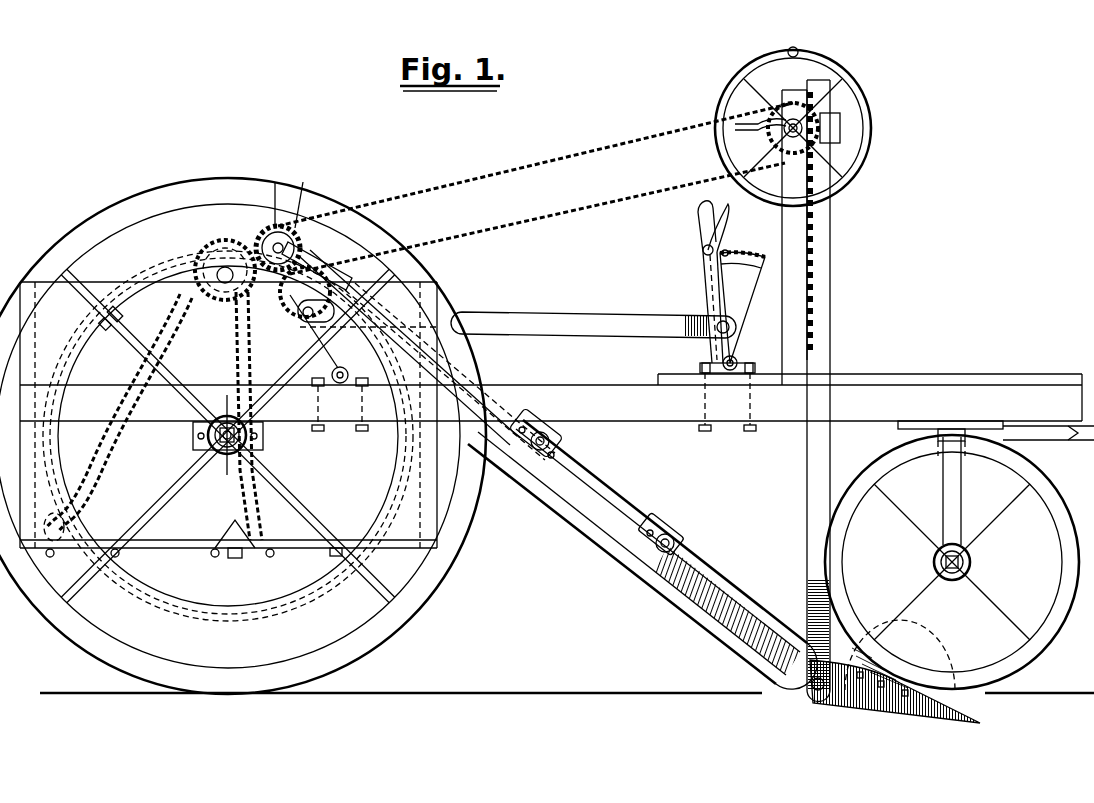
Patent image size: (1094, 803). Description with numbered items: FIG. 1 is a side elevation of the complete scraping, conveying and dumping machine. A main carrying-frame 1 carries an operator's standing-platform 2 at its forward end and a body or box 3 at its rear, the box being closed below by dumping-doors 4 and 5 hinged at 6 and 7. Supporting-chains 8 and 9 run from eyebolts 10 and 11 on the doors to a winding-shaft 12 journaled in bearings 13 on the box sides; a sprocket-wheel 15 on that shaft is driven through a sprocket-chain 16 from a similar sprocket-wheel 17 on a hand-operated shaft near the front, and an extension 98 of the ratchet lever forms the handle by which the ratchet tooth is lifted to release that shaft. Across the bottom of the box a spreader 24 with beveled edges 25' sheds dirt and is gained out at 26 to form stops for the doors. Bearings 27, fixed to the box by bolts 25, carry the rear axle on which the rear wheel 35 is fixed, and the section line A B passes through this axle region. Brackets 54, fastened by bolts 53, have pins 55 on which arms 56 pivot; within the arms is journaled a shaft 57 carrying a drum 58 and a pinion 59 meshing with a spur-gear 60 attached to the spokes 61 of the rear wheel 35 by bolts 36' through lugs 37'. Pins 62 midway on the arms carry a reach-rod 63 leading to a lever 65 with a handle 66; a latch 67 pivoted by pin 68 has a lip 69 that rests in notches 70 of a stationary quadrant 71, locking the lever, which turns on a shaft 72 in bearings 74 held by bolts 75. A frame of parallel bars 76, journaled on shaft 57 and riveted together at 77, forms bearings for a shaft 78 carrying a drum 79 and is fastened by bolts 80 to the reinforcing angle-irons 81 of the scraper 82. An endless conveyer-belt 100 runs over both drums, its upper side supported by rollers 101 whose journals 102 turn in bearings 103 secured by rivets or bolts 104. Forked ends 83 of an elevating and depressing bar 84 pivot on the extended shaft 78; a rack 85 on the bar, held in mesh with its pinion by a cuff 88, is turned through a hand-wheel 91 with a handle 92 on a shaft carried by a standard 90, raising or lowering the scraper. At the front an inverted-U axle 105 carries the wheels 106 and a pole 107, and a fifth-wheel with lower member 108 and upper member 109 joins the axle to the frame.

The main carrying-frame 1 is at (551, 415).
The operator's standing-platform 2 is at (890, 382).
The body or box portion 3 is at (348, 465).
The dumping-door 4 is at (405, 548).
The dumping-door 5 is at (175, 544).
The hinge 6 is at (440, 540).
The hinge 7 is at (235, 558).
The supporting-chain 8 is at (232, 350).
The supporting-chain 9 is at (100, 432).
The eyebolt 10 is at (262, 530).
The eyebolt 11 is at (66, 528).
The winding-shaft 12 is at (230, 285).
The bearings 13 is at (296, 298).
The sprocket-wheel 15 is at (218, 262).
The sprocket-chain 16 is at (500, 176).
The sprocket-wheel 17 is at (768, 135).
The spreader 24 is at (222, 540).
The bolts 25 is at (221, 443).
The beveled edges 25' is at (236, 507).
The gains 26 is at (213, 558).
The bearings 27 is at (262, 430).
The rear wheel 35 is at (430, 590).
The bolts 36' is at (136, 306).
The lugs 37' is at (132, 321).
The bolts 53 is at (362, 432).
The brackets 54 is at (340, 397).
The pins 55 is at (355, 366).
The arms 56 is at (316, 338).
The shaft 57 is at (285, 225).
The drum 58 is at (285, 189).
The pinion 59 is at (300, 258).
The spur-gear 60 is at (68, 352).
The spokes 61 is at (178, 495).
The pins 62 is at (298, 315).
The reach-rod 63 is at (593, 324).
The lever 65 is at (708, 272).
The handle 66 is at (700, 216).
The latch 67 is at (729, 212).
The pin 68 is at (702, 250).
The lip 69 is at (729, 254).
The notches 70 is at (742, 307).
The stationary quadrant 71 is at (742, 259).
The shaft 72 is at (722, 362).
The bearings 74 is at (726, 386).
The bolts 75 is at (703, 400).
The parallel bars 76 is at (642, 554).
The riveted joint 77 is at (720, 612).
The shaft 78 is at (812, 690).
The drum 79 is at (815, 705).
The bolts 80 is at (866, 682).
The reinforcing angle-irons 81 is at (940, 718).
The scraper 82 is at (905, 650).
The forked ends 83 is at (806, 606).
The elevating and depressing bar 84 is at (806, 486).
The rack 85 is at (815, 246).
The cuff 88 is at (842, 123).
The standard 90 is at (815, 305).
The hand-wheel 91 is at (872, 150).
The handle 92 is at (793, 47).
The extension 98 is at (738, 124).
The endless conveyer-belt 100 is at (638, 492).
The rollers 101 is at (548, 432).
The journals 102 is at (552, 442).
The bearings 103 is at (556, 457).
The rivets or bolts 104 is at (522, 440).
The axle 105 is at (945, 492).
The wheels 106 is at (985, 553).
The pole 107 is at (1048, 436).
The lower member of fifth-wheel 108 is at (903, 431).
The upper member of fifth-wheel 109 is at (945, 421).
The section line A B A is at (210, 369).
The section line A B is at (226, 440).